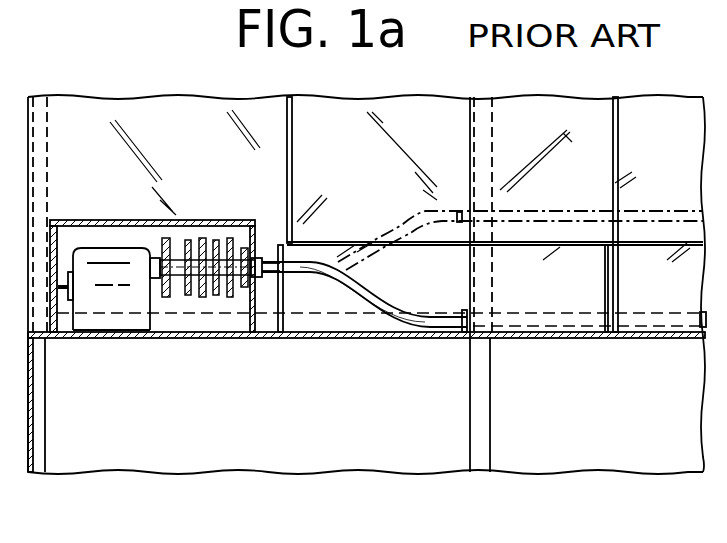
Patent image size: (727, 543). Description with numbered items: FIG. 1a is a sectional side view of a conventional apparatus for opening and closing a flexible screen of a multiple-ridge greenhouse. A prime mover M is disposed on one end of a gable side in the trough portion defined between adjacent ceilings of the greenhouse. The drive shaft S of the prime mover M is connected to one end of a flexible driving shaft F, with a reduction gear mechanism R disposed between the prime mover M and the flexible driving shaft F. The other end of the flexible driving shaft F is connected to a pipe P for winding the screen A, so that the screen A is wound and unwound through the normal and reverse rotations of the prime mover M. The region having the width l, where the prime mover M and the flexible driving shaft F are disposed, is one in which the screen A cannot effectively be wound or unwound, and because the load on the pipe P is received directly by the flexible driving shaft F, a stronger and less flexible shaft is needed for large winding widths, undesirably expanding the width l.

The screen A is at (509, 115).
The reduction gear mechanism R is at (209, 236).
The drive shaft S is at (258, 260).
The flexible driving shaft F is at (418, 212).
The pipe P is at (462, 327).
The prime mover M is at (108, 316).
The width l is at (468, 500).